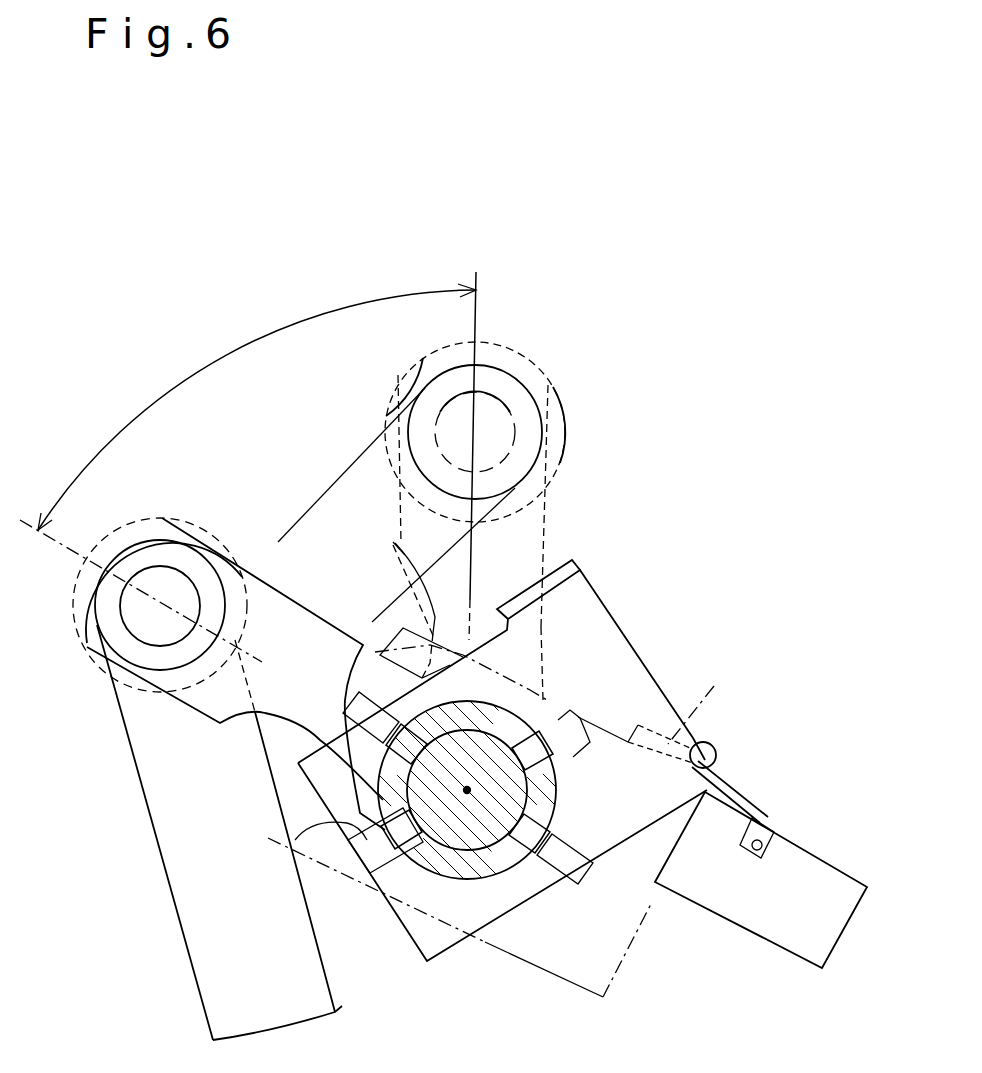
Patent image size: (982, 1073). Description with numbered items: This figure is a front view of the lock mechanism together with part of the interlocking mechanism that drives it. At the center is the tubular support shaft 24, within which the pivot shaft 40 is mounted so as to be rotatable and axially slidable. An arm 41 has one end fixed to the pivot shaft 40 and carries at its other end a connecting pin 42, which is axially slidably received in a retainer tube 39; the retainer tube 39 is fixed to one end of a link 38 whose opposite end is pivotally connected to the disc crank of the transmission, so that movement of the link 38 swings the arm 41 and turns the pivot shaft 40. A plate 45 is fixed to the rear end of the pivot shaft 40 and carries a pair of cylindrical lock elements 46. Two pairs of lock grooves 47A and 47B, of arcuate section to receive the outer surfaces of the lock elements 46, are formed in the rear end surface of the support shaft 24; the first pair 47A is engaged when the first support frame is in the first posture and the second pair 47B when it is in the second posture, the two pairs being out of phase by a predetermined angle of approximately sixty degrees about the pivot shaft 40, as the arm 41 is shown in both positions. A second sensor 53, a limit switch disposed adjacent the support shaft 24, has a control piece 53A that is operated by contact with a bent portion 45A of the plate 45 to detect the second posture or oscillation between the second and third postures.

The tubular support shaft 24 is at (470, 880).
The link 38 is at (220, 970).
The retainer tube 39 is at (103, 620).
The pivot shaft 40 is at (488, 832).
The arm 41 is at (210, 720).
The connecting pin 42 is at (163, 592).
The plate 45 is at (643, 698).
The bent portion of plate 45A is at (567, 557).
The lock elements 46 is at (295, 840).
The lock grooves (first pair) 47A is at (395, 860).
The lock grooves (second pair) 47B is at (352, 725).
The second sensor 53 is at (780, 935).
The control piece 53A is at (718, 750).